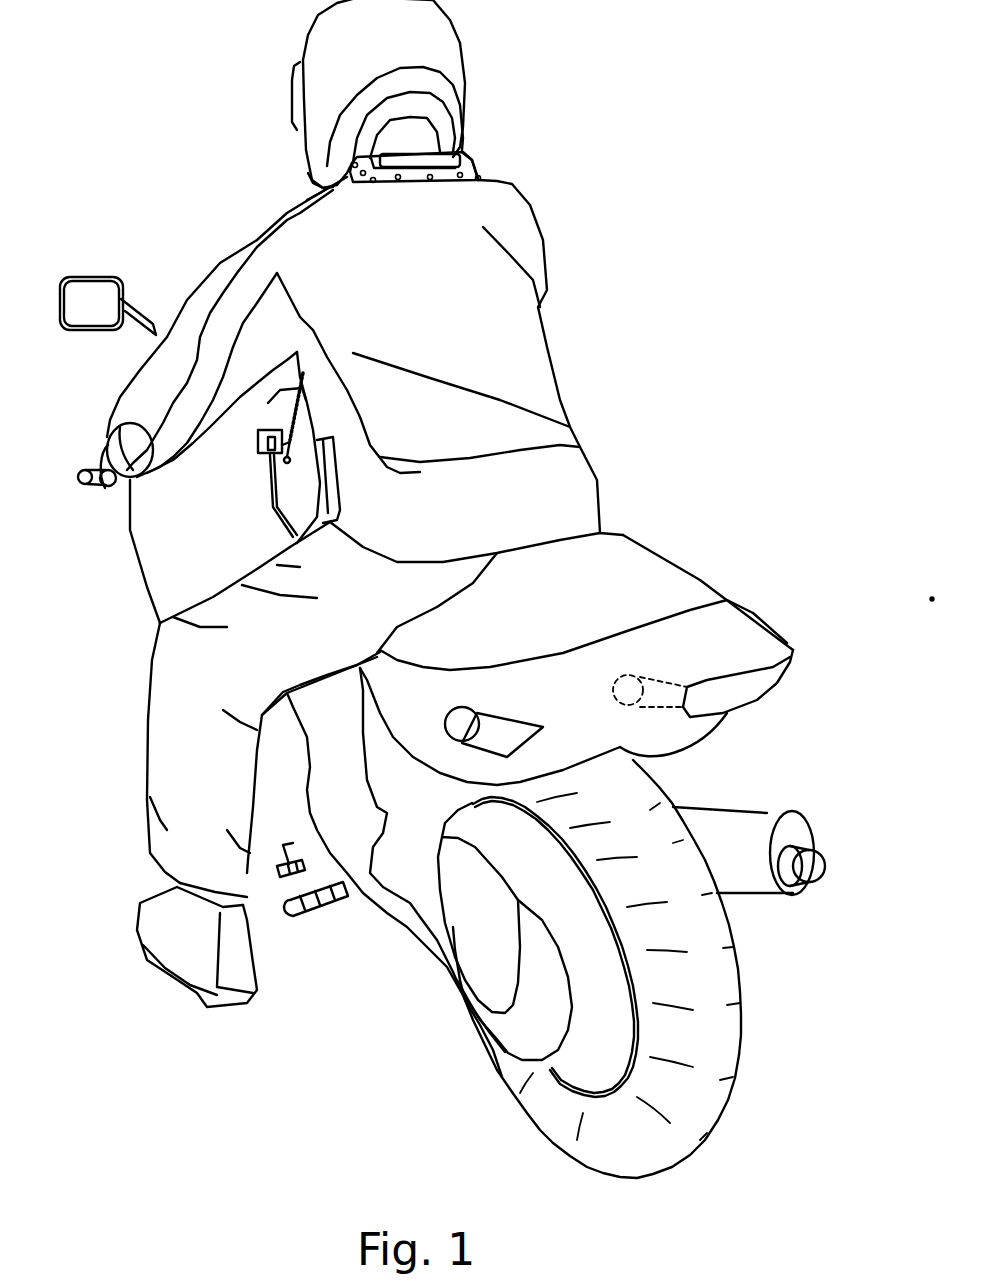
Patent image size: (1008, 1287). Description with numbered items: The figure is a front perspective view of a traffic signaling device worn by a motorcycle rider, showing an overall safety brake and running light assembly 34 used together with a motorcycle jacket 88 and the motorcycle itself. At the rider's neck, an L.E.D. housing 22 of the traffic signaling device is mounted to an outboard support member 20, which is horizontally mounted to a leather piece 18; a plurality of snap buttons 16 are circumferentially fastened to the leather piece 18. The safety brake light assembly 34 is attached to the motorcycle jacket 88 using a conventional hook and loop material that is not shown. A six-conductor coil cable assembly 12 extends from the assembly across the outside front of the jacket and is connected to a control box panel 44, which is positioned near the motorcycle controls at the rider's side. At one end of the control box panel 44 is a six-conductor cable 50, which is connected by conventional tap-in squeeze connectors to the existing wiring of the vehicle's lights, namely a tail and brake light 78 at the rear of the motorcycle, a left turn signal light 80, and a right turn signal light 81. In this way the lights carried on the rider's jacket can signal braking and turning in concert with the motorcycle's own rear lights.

The six-conductor coil cable assembly 12 is at (297, 412).
The snap buttons 16 is at (430, 180).
The leather piece 18 is at (383, 180).
The outboard support member 20 is at (465, 163).
The L.E.D. housing 22 is at (452, 153).
The safety brake and running light assembly 34 is at (492, 147).
The control box panel 44 is at (263, 453).
The six-conductor cable 50 is at (273, 508).
The tail and brake light 78 is at (740, 688).
The left turn signal light 80 is at (462, 727).
The right turn signal light 81 is at (640, 700).
The motorcycle jacket 88 is at (507, 327).